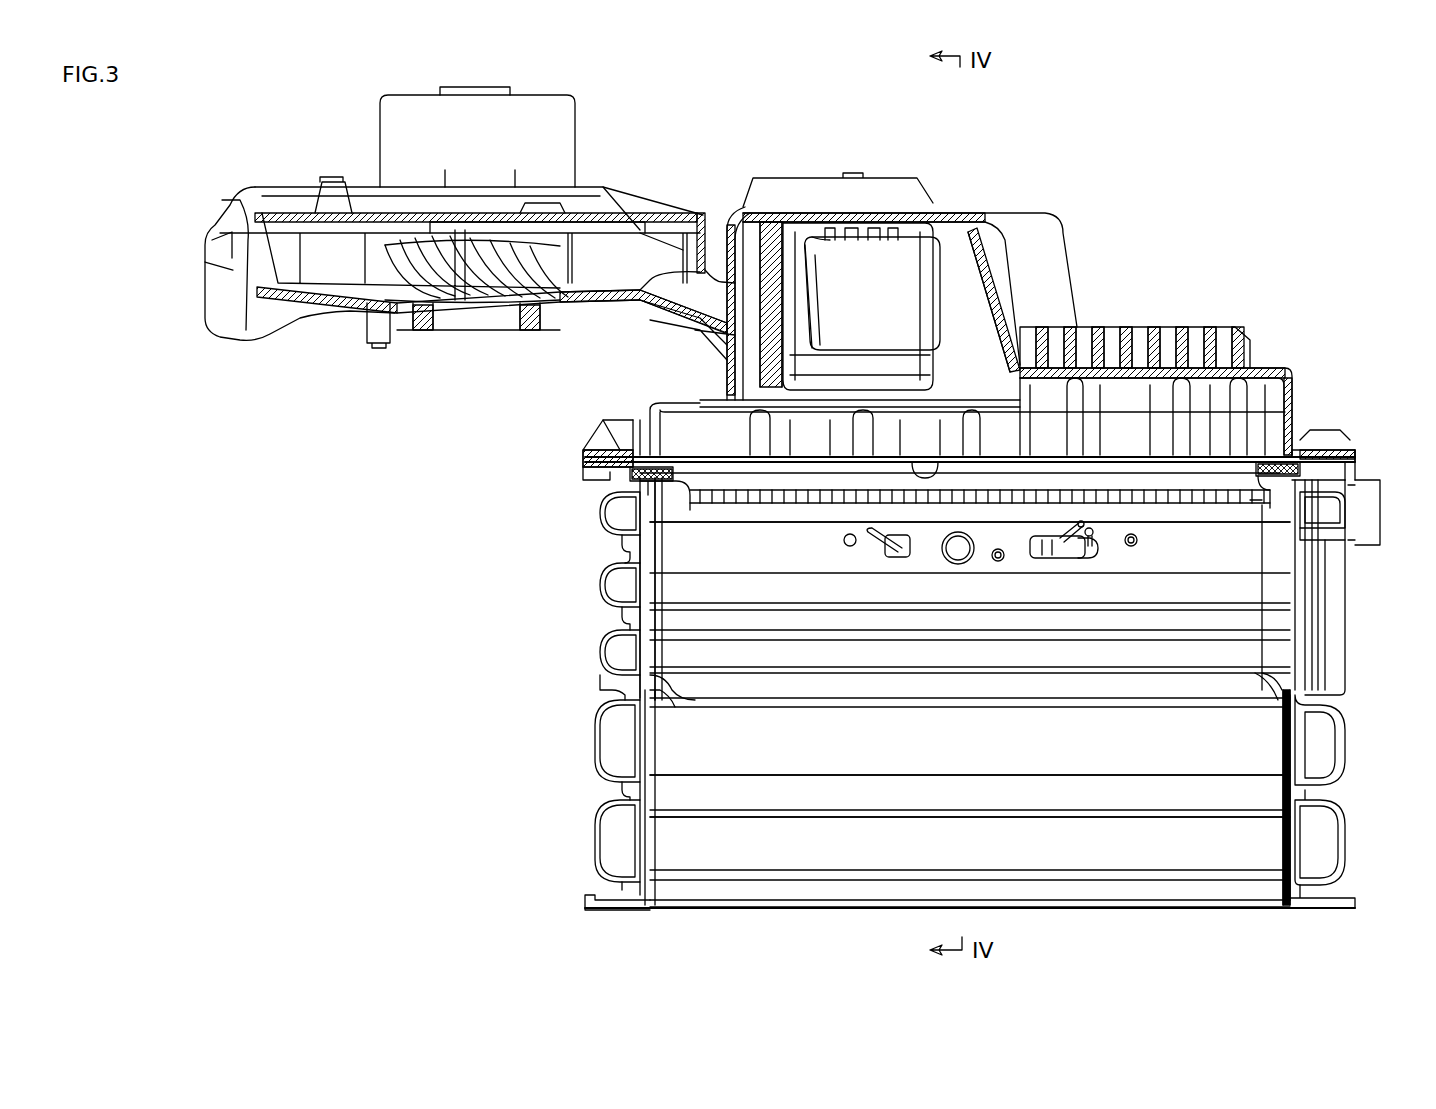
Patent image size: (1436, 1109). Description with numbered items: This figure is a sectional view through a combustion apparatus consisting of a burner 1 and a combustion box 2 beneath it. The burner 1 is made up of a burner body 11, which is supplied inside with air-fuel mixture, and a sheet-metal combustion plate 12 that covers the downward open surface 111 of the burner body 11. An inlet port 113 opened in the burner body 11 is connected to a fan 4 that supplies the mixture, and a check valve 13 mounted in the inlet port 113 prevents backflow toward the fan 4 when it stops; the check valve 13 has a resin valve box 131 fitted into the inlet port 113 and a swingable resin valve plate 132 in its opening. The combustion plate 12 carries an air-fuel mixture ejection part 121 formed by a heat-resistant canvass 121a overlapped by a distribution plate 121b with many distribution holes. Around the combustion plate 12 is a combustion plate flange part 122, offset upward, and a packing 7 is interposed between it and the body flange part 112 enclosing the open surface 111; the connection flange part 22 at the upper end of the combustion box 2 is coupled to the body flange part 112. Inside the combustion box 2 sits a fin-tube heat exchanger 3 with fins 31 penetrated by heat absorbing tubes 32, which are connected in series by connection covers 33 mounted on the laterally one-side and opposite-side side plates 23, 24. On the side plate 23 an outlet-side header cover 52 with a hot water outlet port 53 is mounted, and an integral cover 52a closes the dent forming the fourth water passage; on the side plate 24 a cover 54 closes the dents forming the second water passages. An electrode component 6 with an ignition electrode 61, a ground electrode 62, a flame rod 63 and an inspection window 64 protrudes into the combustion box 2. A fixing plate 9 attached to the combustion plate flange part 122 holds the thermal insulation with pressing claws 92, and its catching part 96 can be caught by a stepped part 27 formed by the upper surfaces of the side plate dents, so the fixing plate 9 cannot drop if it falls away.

The burner 1 is at (1122, 316).
The combustion box 2 is at (1335, 662).
The heat exchanger 3 is at (990, 692).
The fan 4 is at (290, 178).
The electrode component 6 is at (1087, 588).
The packing 7 is at (1348, 450).
The fixing plate 9 is at (665, 503).
The burner body 11 is at (1030, 228).
The combustion plate 12 is at (1262, 530).
The check valve 13 is at (910, 295).
The connection flange part 22 is at (600, 478).
The laterally one-side side plate 23 is at (1332, 610).
The laterally opposite-side side plate 24 is at (625, 692).
The stepped part 27 is at (622, 448).
The fins 31 is at (1280, 700).
The heat absorbing tubes 32 is at (878, 817).
The connection covers 33 is at (595, 845).
The outlet-side header cover 52 is at (1345, 632).
The cover 52a is at (1330, 530).
The hot water outlet port 53 is at (1382, 515).
The cover 54 is at (600, 650).
The ignition electrode 61 is at (1096, 558).
The ground electrode 62 is at (1065, 555).
The flame rod 63 is at (875, 540).
The inspection window 64 is at (962, 550).
The pressing claws 92 is at (667, 480).
The catching part 96 is at (1322, 540).
The open surface 111 is at (930, 470).
The body flange part 112 is at (598, 440).
The inlet port 113 is at (805, 320).
The air-fuel mixture ejection part 121 is at (1250, 568).
The canvass 121a is at (1172, 505).
The distribution plate 121b is at (1215, 505).
The combustion plate flange part 122 is at (640, 455).
The valve box 131 is at (822, 355).
The valve plate 132 is at (920, 318).